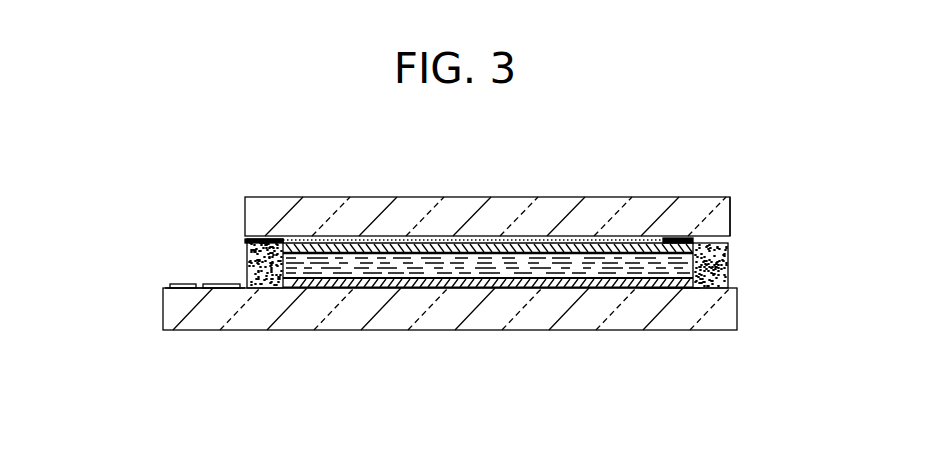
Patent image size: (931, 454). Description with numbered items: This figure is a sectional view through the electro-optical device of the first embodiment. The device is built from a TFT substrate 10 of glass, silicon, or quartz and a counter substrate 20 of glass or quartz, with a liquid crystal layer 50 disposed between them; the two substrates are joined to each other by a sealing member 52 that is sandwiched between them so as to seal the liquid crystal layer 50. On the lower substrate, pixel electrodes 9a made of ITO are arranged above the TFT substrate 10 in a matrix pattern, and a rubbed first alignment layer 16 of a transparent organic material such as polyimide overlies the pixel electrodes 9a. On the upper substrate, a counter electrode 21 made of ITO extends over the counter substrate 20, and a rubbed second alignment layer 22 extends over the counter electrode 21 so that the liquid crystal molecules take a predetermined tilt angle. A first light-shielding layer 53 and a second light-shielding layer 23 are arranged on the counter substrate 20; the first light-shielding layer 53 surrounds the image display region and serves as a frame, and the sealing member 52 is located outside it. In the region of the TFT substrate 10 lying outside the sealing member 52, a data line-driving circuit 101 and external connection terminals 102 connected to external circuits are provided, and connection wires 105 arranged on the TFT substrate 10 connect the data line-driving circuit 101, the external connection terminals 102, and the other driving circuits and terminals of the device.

The TFT substrate 10 is at (513, 328).
The counter substrate 20 is at (370, 207).
The second alignment layer 22 is at (730, 203).
The sealing member 52 is at (253, 265).
The first light-shielding layer 53 is at (293, 238).
The second light-shielding layer 23 is at (477, 238).
The counter electrode 21 is at (617, 238).
The liquid crystal layer 50 is at (545, 259).
The pixel electrodes 9a is at (333, 290).
The first alignment layer 16 is at (705, 280).
The data line-driving circuit 101 is at (197, 283).
The external connection terminals 102 is at (178, 286).
The connection wires 105 is at (168, 284).